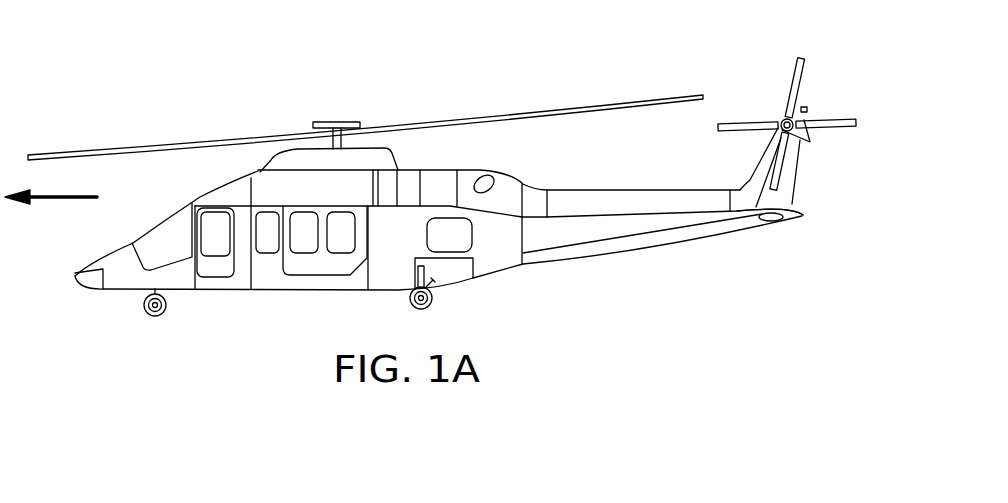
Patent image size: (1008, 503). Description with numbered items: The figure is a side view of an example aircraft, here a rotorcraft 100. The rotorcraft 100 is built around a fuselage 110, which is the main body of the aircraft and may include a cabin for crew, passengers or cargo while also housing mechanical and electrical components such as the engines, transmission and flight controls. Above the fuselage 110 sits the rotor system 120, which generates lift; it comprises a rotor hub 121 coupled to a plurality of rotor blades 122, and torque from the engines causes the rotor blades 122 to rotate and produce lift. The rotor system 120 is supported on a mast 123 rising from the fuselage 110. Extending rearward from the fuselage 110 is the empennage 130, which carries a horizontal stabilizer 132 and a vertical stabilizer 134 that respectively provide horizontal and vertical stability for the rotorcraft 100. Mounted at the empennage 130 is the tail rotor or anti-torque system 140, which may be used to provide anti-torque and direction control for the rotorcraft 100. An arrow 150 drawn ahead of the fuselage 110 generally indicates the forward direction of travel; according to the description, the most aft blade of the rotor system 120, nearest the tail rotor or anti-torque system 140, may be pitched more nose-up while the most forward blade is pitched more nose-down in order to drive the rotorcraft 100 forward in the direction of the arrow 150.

The rotorcraft 100 is at (430, 177).
The fuselage 110 is at (270, 291).
The rotor system 120 is at (365, 104).
The rotor hub 121 is at (328, 121).
The rotor blades 122 is at (170, 140).
The mast 123 is at (354, 137).
The empennage 130 is at (653, 248).
The horizontal stabilizer 132 is at (773, 222).
The vertical stabilizer 134 is at (755, 170).
The tail rotor or anti-torque system 140 is at (806, 95).
The arrow 150 is at (60, 201).